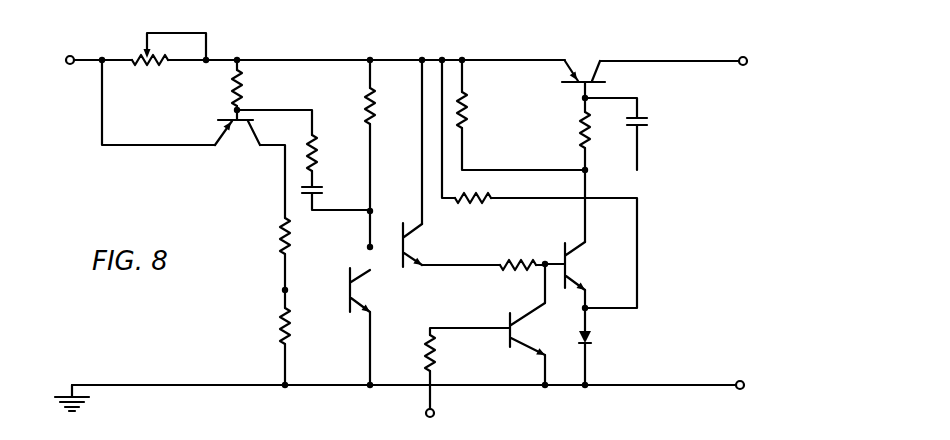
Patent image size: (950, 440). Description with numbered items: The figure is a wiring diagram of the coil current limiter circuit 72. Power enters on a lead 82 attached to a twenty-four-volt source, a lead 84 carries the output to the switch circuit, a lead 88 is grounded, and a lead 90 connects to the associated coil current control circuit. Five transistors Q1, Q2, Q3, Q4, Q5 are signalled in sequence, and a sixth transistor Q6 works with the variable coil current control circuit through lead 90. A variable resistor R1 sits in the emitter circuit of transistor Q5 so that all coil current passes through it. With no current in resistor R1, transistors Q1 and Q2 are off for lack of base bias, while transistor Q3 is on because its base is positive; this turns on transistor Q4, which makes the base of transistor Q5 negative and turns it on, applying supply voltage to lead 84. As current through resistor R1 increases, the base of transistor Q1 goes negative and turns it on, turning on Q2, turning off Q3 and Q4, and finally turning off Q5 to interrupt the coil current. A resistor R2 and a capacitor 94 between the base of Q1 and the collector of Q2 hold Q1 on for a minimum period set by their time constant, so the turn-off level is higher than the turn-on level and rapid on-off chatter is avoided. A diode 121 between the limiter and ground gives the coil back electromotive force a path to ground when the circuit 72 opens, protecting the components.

The lead 82 is at (67, 65).
The variable resistor R1 is at (140, 66).
The transistor Q1 is at (233, 125).
The resistor R2 is at (319, 152).
The capacitor 94 is at (320, 185).
The transistor Q2 is at (358, 291).
The transistor Q3 is at (411, 242).
The transistor Q4 is at (572, 259).
The transistor Q5 is at (582, 79).
The sixth transistor Q6 is at (518, 331).
The coil current limiter circuit 72 is at (662, 232).
The diode 121 is at (593, 338).
The lead 84 is at (702, 61).
The lead 88 is at (655, 385).
The lead 90 is at (426, 412).